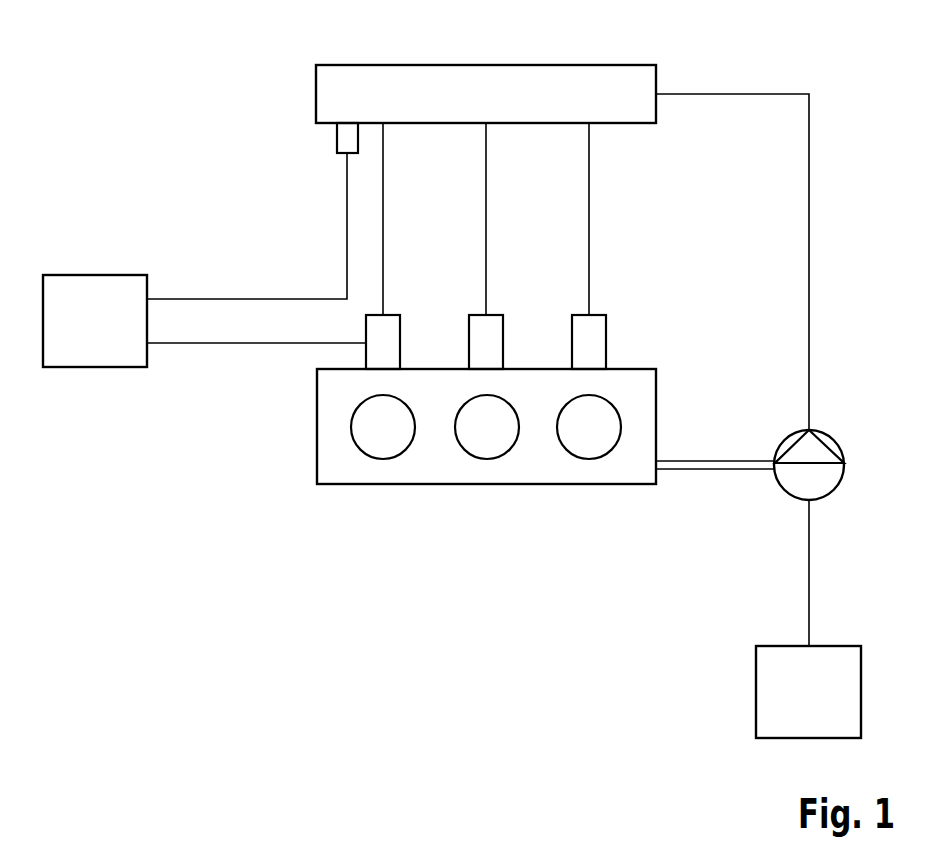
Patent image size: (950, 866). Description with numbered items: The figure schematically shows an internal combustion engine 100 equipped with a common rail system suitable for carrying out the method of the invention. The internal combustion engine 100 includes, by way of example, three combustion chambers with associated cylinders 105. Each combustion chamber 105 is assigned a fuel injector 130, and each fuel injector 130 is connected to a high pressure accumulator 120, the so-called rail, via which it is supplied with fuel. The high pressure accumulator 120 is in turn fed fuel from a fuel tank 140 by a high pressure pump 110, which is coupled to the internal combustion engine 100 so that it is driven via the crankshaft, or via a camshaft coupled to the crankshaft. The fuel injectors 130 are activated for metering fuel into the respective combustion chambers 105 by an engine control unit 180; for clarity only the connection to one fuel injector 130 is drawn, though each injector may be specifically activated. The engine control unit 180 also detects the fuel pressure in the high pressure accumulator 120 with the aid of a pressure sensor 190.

The internal combustion engine 100 is at (316, 427).
The cylinders 105 is at (380, 459).
The high pressure pump 110 is at (788, 435).
The high pressure accumulator 120 is at (485, 65).
The fuel injector 130 is at (606, 341).
The fuel tank 140 is at (756, 690).
The engine control unit 180 is at (92, 275).
The pressure sensor 190 is at (337, 136).